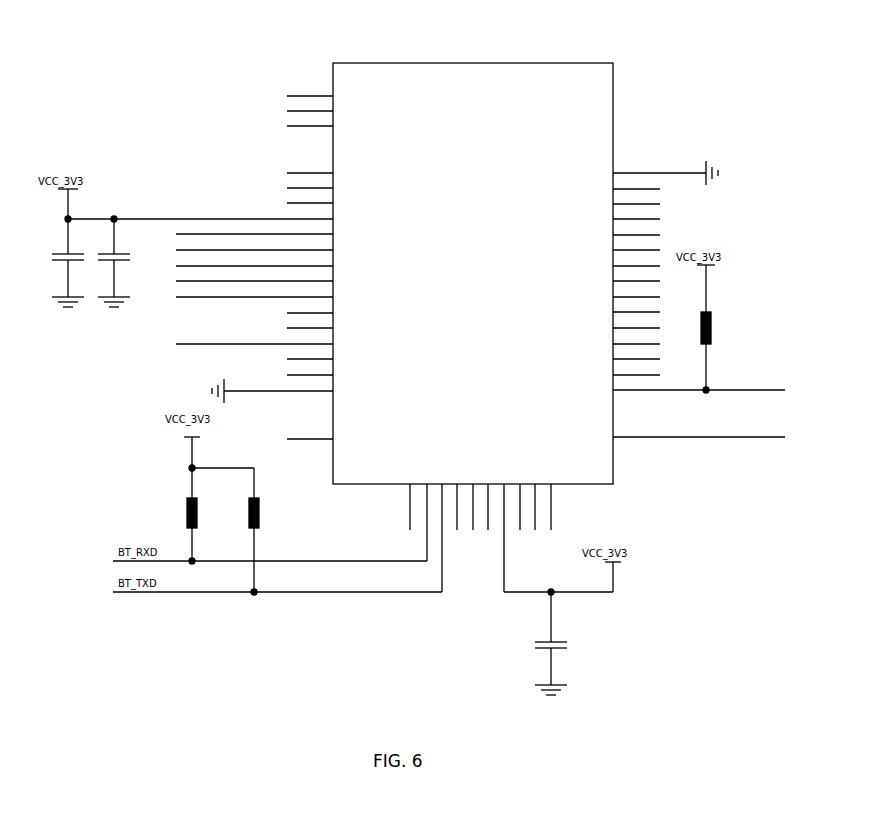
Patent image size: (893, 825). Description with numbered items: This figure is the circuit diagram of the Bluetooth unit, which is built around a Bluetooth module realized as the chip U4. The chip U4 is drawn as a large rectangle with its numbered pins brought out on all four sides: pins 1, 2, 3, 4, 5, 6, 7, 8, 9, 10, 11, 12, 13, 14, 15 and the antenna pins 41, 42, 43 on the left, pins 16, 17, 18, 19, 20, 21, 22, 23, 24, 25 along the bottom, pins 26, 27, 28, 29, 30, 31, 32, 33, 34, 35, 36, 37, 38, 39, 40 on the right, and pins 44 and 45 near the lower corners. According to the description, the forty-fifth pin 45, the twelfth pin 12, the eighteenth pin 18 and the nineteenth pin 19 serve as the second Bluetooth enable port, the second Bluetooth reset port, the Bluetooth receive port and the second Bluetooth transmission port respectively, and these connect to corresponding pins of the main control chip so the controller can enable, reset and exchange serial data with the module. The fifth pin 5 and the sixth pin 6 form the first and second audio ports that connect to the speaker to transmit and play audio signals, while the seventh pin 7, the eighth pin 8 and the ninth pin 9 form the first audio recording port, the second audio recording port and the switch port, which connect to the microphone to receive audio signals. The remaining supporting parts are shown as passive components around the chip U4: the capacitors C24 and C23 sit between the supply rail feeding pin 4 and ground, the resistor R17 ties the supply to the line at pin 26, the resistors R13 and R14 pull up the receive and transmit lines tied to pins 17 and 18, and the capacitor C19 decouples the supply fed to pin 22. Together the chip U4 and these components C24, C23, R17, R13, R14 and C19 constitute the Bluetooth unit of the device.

The chip U4 is at (473, 264).
The capacitor C24 is at (53, 263).
The capacitor C23 is at (125, 263).
The resistor R17 is at (720, 327).
The resistor R13 is at (207, 514).
The resistor R14 is at (268, 530).
The capacitor C19 is at (530, 643).
The pin NC 1 is at (320, 171).
The pin AOHPM 2 is at (332, 186).
The pin AOHPL 3 is at (330, 201).
The pin PVDD 4 is at (218, 217).
The fifth pin 5 is at (272, 231).
The sixth pin 6 is at (271, 247).
The seventh pin 7 is at (276, 263).
The eighth pin 8 is at (275, 278).
The ninth pin 9 is at (280, 294).
The pin NC 10 is at (320, 311).
The pin AIL 11 is at (321, 326).
The twelfth pin 12 is at (274, 341).
The pin P01 13 is at (323, 357).
The pin P04 14 is at (323, 373).
The pin GND 15 is at (287, 391).
The pin P15 16 is at (408, 494).
The pin HCI_RXD 17 is at (426, 497).
The eighteenth pin 18 is at (441, 513).
The nineteenth pin 19 is at (456, 476).
The pin VDD_IO 20 is at (472, 485).
The pin ADAP_IN 21 is at (487, 482).
The pin BAT_IN 22 is at (503, 518).
The pin NC 23 is at (518, 497).
The pin SYS_PWR 24 is at (534, 480).
The pin 1V8 25 is at (549, 494).
The pin MFB 26 is at (685, 384).
The pin LED3 27 is at (620, 373).
The pin LED2 28 is at (620, 357).
The pin LED1 29 is at (620, 342).
The pin NC 30 is at (626, 326).
The pin P00 31 is at (623, 310).
The pin P03 32 is at (623, 295).
The pin FAN 33 is at (623, 279).
The pin TV2 34 is at (623, 264).
The pin VCC_RF 35 is at (613, 249).
The pin P02 36 is at (623, 233).
The pin P27 37 is at (623, 217).
The pin P30 38 is at (623, 202).
The pin P06 39 is at (623, 187).
The pin GND 40 is at (650, 173).
The pin ANT1 41 is at (327, 94).
The pin ANT2 42 is at (327, 109).
The pin ANT3 43 is at (327, 124).
The pin P24 44 is at (323, 437).
The forty-fifth pin 45 is at (686, 433).